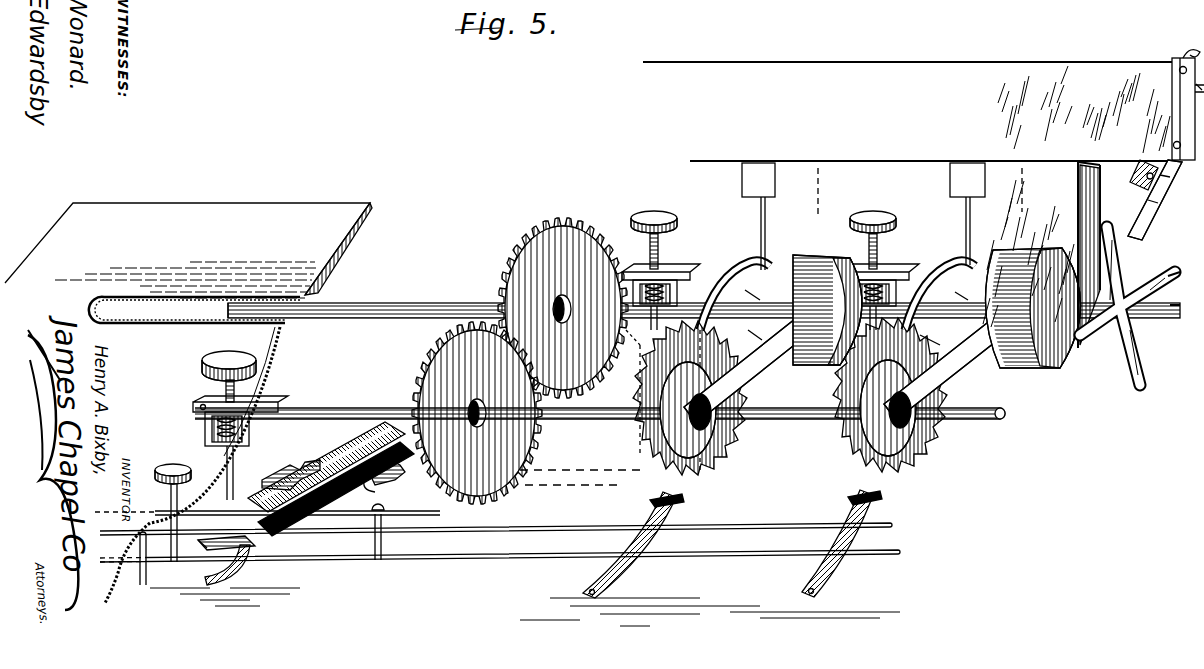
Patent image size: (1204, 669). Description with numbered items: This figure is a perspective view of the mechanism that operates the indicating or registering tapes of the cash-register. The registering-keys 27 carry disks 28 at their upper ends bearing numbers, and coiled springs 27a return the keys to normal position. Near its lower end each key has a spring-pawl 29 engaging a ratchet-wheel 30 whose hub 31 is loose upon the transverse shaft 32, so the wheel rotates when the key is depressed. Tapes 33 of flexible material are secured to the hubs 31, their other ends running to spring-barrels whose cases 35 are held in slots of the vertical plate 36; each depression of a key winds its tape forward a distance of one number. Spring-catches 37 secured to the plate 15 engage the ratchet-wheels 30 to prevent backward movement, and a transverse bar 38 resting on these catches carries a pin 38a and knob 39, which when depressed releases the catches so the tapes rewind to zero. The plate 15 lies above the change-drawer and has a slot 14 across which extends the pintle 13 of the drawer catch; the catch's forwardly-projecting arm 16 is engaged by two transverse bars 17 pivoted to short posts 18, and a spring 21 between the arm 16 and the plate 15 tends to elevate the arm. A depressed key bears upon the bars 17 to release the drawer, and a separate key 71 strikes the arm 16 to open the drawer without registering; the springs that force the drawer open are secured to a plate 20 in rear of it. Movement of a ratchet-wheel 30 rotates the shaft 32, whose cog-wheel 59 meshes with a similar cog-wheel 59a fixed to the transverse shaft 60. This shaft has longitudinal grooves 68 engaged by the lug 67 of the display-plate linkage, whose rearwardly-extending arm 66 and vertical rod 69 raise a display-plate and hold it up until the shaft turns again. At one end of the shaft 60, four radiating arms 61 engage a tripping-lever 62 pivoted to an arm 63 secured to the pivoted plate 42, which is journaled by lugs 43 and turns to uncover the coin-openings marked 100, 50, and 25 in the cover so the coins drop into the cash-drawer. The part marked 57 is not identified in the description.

The coin-opening marked 100 is at (188, 250).
The coin-opening marked 50 is at (265, 216).
The coin-opening marked 25 is at (335, 215).
The longitudinal grooves 68 is at (372, 320).
The transverse shaft 60 is at (704, 298).
The cog-wheel 59a is at (559, 308).
The cog-wheel 59 is at (477, 413).
The transverse shaft 32 is at (612, 402).
The disks 28 is at (763, 229).
The registering-keys 27 is at (899, 254).
The coiled springs 27a is at (930, 270).
The lug 67 is at (858, 315).
The key 71 is at (225, 398).
The knob 39 is at (171, 503).
The transverse bars 17 is at (493, 512).
The transverse bar 38 is at (500, 578).
The short posts 18 is at (395, 522).
The pin 38a is at (200, 597).
The slot 14 is at (378, 455).
The pintle 13 is at (412, 510).
The spring 21 is at (242, 547).
The forwardly-projecting arm 16 is at (212, 568).
The plate 15 is at (580, 475).
The ratchet-wheels 30 is at (793, 396).
The hubs 31 is at (788, 409).
The tapes 33 is at (862, 360).
The spring-barrel cases 35 is at (1088, 378).
The rearwardly-extending arm 66 is at (933, 335).
The spring-pawls 29 is at (640, 348).
The spring-catches 37 is at (710, 558).
The pivoted plate 42 is at (907, 107).
The plate 20 is at (932, 242).
The vertical rods 69 is at (980, 225).
The vertical plate 36 is at (1003, 192).
The bracket 57 is at (1187, 93).
The lugs 43 is at (1200, 88).
The tripping-lever 62 is at (1175, 205).
The arm 63 is at (1158, 180).
The radiating arms 61 is at (1130, 306).